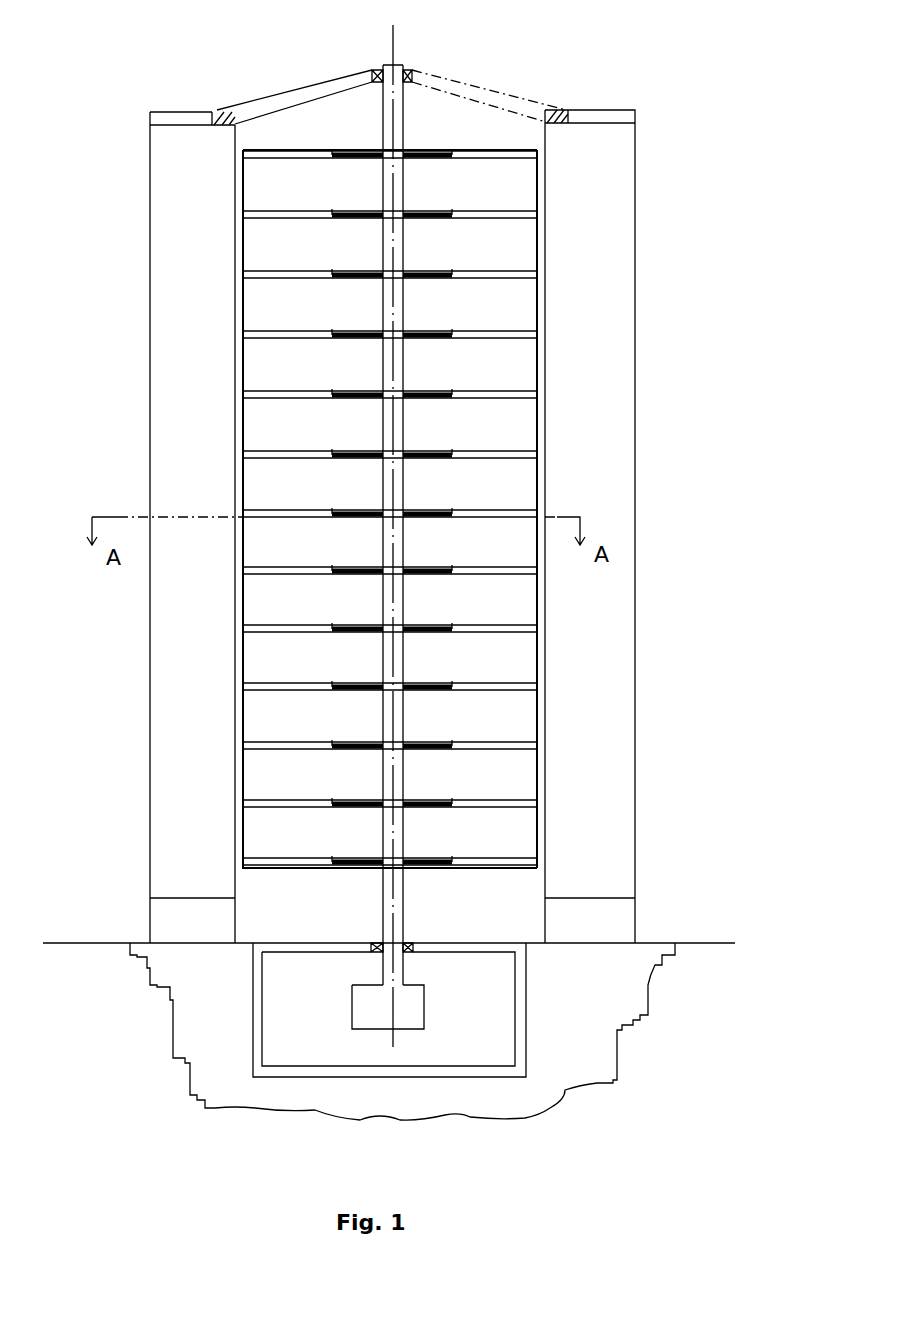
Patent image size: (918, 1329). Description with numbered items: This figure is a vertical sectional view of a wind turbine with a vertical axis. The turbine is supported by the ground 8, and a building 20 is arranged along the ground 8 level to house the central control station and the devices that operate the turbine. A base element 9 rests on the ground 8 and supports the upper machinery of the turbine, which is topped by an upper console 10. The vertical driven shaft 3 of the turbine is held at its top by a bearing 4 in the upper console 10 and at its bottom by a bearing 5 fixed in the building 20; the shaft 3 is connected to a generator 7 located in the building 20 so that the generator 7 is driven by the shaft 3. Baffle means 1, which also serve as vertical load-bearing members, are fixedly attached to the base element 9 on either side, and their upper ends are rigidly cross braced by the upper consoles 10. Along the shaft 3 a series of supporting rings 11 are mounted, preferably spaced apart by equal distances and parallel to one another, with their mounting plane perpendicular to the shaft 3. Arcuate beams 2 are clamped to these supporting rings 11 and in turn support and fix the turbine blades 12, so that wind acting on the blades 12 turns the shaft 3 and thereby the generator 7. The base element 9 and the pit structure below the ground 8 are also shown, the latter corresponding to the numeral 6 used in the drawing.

The baffle means 1 is at (623, 157).
The arcuate beams 2 is at (530, 272).
The vertical driven shaft 3 is at (395, 378).
The bearing 4 is at (412, 70).
The bearing 5 is at (408, 941).
The pit 6 is at (522, 978).
The generator 7 is at (423, 1008).
The ground 8 is at (705, 939).
The base element 9 is at (618, 930).
The upper console 10 is at (500, 91).
The supporting rings 11 is at (437, 452).
The turbine blades 12 is at (520, 665).
The building 20 is at (585, 1037).